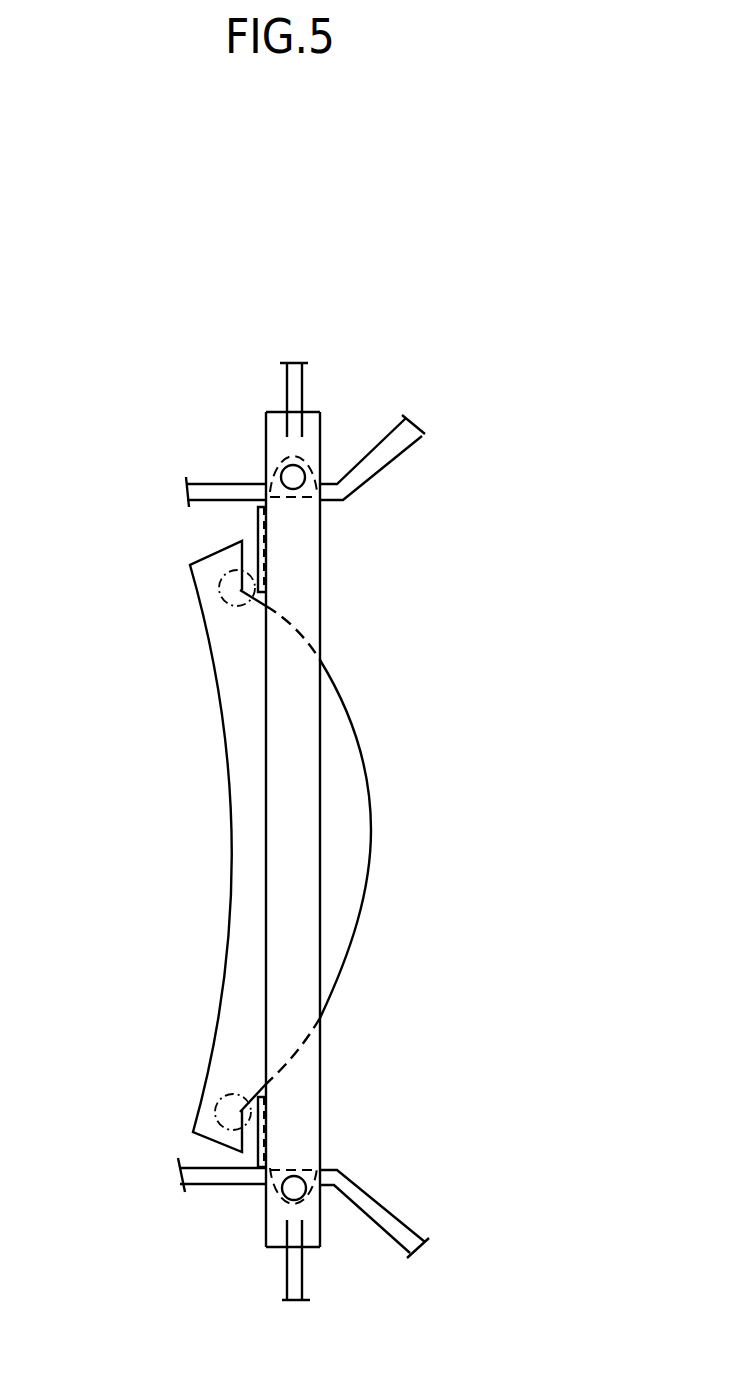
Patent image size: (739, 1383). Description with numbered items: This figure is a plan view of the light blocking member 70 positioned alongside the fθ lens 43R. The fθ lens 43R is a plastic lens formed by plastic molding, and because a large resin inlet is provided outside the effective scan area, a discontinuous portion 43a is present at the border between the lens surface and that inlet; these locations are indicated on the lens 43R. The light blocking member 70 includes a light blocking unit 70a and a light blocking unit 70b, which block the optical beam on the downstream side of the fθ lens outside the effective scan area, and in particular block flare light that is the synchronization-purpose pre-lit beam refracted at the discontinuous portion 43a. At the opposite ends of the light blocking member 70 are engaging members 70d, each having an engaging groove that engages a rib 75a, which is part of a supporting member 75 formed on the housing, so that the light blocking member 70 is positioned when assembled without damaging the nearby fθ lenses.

The light blocking member 70 is at (305, 817).
The light blocking unit 70a is at (252, 1127).
The light blocking unit 70b is at (258, 535).
The engaging member 70d is at (312, 428).
The supporting member 75 is at (372, 477).
The rib 75a is at (287, 390).
The fθ lens 43R is at (247, 811).
The discontinuous portion 43a is at (218, 598).